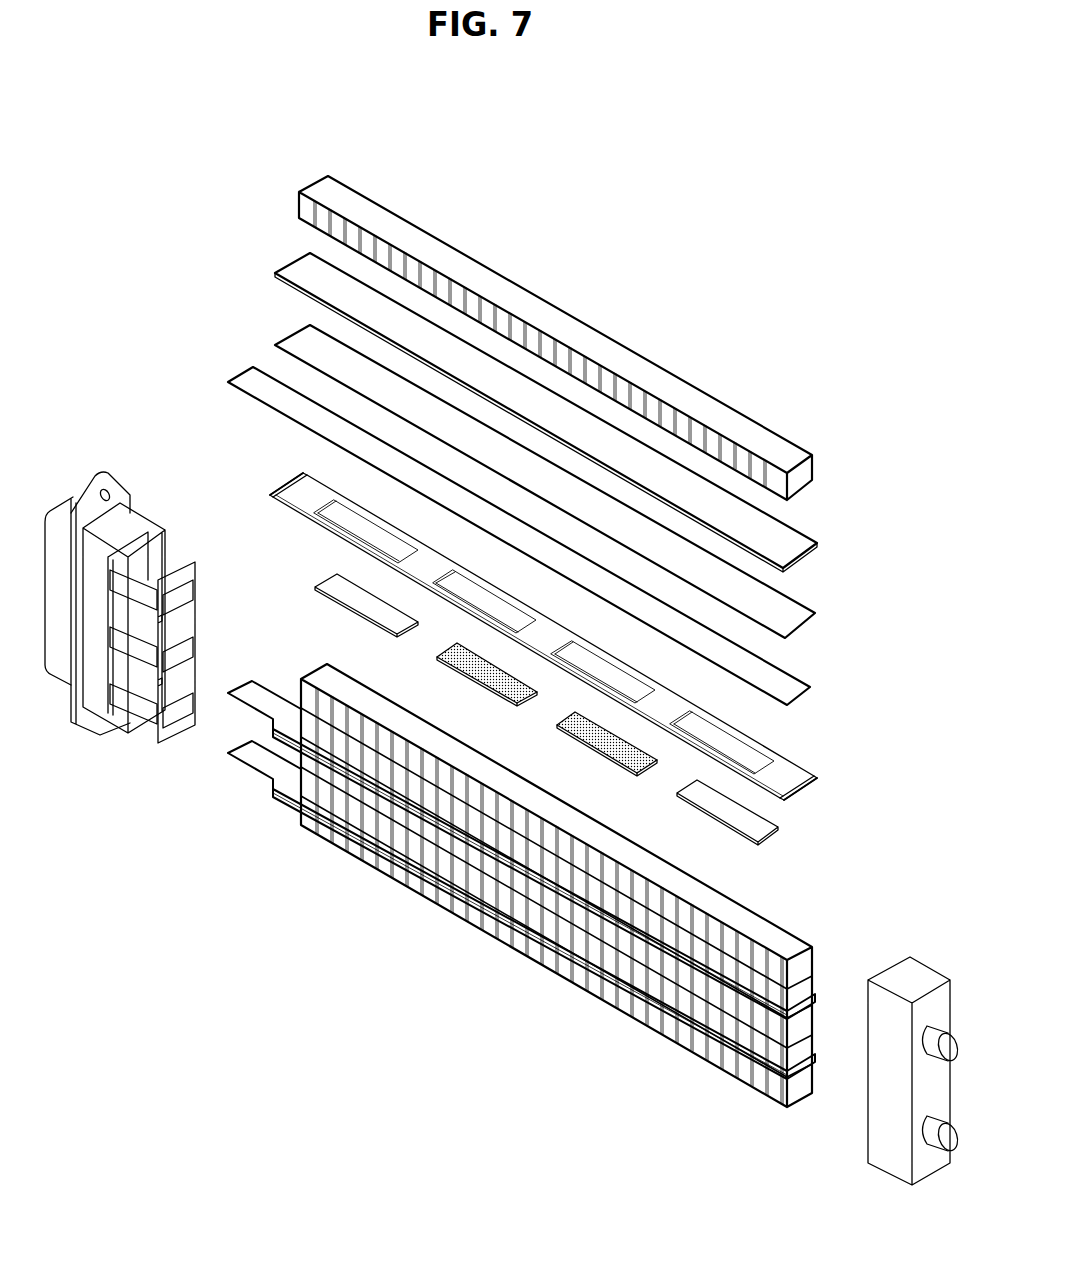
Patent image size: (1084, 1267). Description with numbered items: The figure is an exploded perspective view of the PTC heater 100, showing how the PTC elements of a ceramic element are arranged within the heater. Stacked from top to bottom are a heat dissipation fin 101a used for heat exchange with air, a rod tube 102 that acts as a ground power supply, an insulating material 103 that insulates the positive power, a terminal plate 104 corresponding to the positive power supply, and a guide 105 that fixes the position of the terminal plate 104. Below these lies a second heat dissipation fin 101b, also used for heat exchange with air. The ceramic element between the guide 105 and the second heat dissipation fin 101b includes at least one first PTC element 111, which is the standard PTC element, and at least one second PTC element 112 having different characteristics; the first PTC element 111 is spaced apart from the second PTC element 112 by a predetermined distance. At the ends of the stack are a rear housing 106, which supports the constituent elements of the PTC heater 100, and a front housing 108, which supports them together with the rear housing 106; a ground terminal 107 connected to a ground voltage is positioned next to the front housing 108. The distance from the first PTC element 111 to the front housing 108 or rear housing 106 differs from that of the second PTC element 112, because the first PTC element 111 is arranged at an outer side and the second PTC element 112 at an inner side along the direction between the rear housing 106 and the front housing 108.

The PTC heater 100 is at (323, 110).
The heat dissipation fin 101a is at (808, 468).
The second heat dissipation fin 101b is at (790, 931).
The rod tube 102 is at (817, 546).
The insulating material 103 is at (815, 616).
The terminal plate 104 is at (810, 690).
The guide 105 is at (814, 772).
The rear housing 106 is at (920, 968).
The ground terminal 107 is at (185, 557).
The front housing 108 is at (70, 490).
The first PTC element 111 is at (366, 616).
The second PTC element 112 is at (487, 688).